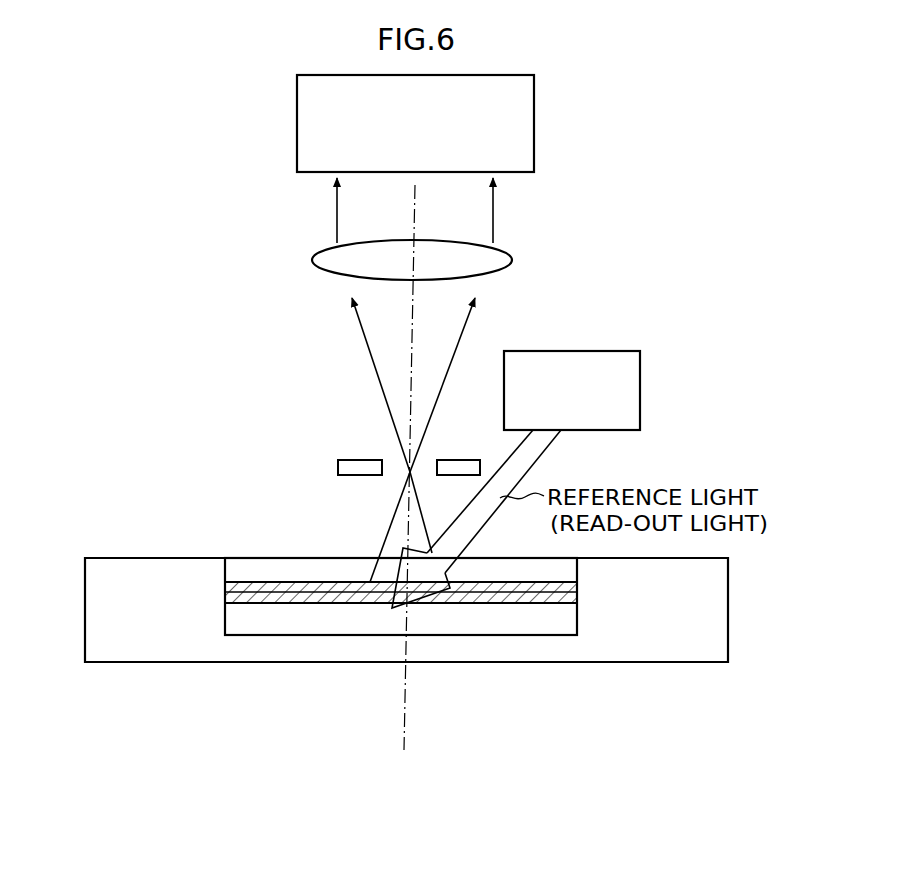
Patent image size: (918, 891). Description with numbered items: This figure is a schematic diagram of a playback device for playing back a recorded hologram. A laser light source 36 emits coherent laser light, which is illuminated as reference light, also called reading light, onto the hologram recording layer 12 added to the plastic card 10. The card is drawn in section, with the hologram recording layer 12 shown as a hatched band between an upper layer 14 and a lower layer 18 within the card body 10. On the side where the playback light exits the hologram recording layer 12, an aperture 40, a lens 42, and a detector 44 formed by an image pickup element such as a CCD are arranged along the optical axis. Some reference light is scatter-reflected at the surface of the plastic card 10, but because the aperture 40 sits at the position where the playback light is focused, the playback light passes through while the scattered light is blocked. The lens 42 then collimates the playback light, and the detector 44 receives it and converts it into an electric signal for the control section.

The plastic card 10 is at (185, 650).
The hologram recording layer 12 is at (578, 592).
The cover layer 14 is at (260, 570).
The substrate 18 is at (525, 636).
The laser light source 36 is at (641, 410).
The aperture 40 is at (430, 460).
The lens 42 is at (512, 265).
The detector 44 is at (535, 145).